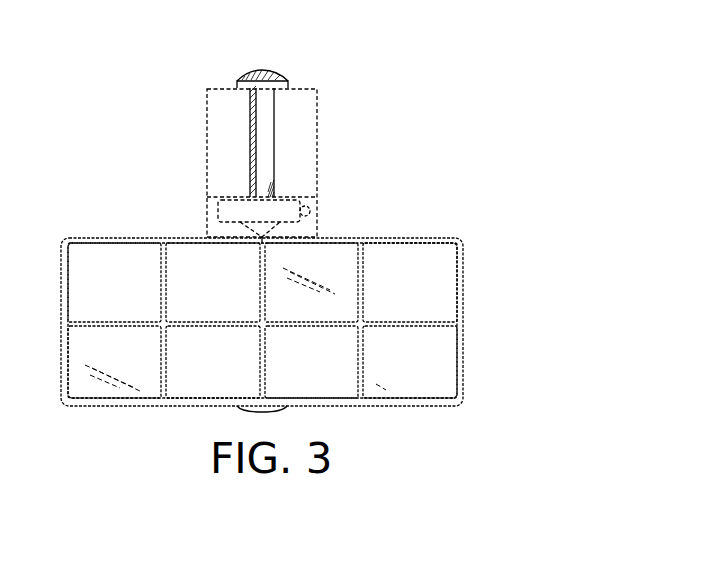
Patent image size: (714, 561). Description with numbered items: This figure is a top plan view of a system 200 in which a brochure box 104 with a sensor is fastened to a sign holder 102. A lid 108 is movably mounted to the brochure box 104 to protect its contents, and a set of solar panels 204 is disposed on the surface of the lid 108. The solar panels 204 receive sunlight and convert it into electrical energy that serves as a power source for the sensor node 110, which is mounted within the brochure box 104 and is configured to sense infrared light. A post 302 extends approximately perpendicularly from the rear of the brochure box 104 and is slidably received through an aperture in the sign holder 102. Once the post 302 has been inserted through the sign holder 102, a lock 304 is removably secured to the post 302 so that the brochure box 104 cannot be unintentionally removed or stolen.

The system 200 is at (519, 62).
The sign holder 102 is at (318, 146).
The brochure box 104 is at (407, 216).
The lid 108 is at (463, 376).
The sensor node 110 is at (237, 213).
The solar panels 204 is at (430, 302).
The post 302 is at (250, 150).
The lock 304 is at (262, 72).